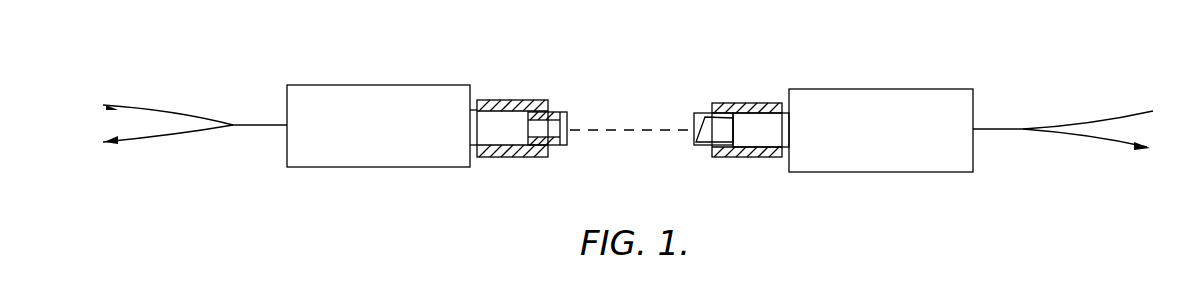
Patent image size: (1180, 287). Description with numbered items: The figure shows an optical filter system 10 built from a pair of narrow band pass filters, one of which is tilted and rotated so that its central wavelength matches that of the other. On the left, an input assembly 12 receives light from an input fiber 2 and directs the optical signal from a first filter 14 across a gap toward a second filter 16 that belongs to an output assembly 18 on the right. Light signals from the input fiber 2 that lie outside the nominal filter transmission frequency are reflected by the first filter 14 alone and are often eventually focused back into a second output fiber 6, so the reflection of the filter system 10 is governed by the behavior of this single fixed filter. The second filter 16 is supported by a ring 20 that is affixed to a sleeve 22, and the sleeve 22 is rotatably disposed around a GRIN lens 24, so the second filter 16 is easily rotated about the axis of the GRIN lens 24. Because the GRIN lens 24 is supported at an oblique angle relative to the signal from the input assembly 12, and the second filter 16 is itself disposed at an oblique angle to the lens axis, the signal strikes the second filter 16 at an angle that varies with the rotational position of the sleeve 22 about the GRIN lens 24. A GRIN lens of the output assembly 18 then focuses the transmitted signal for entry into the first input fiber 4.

The input fiber 2 is at (148, 110).
The first input fiber 4 is at (1088, 138).
The second output fiber 6 is at (145, 132).
The optical filter system 10 is at (347, 55).
The input assembly 12 is at (363, 168).
The first filter 14 is at (569, 128).
The second filter 16 is at (719, 135).
The output assembly 18 is at (877, 173).
The ring 20 is at (703, 148).
The sleeve 22 is at (740, 102).
The GRIN lens 24 is at (765, 137).